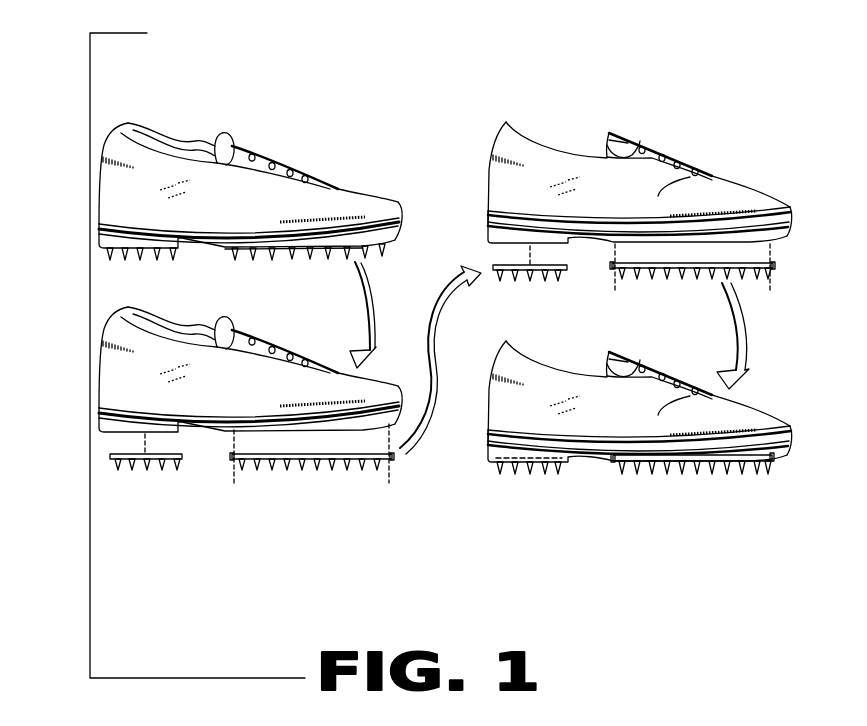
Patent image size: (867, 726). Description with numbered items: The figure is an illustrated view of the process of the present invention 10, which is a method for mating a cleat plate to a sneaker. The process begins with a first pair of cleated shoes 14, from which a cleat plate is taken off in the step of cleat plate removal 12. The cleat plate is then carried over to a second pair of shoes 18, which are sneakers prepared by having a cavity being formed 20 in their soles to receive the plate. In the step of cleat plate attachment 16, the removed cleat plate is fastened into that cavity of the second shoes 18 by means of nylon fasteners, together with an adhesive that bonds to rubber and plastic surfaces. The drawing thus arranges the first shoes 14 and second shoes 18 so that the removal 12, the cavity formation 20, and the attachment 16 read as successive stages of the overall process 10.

The present invention 10 is at (90, 325).
The cleat plate removal 12 is at (395, 458).
The first shoes 14 is at (273, 156).
The cleat plate attachment 16 is at (747, 467).
The second shoes 18 is at (663, 162).
The cavity being formed 20 is at (772, 253).